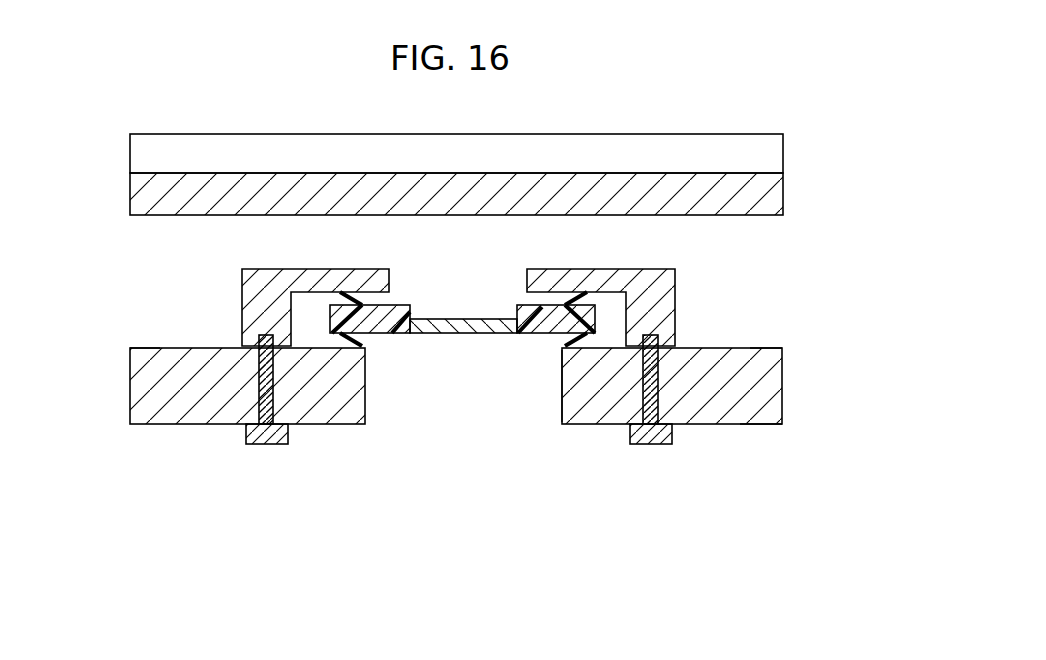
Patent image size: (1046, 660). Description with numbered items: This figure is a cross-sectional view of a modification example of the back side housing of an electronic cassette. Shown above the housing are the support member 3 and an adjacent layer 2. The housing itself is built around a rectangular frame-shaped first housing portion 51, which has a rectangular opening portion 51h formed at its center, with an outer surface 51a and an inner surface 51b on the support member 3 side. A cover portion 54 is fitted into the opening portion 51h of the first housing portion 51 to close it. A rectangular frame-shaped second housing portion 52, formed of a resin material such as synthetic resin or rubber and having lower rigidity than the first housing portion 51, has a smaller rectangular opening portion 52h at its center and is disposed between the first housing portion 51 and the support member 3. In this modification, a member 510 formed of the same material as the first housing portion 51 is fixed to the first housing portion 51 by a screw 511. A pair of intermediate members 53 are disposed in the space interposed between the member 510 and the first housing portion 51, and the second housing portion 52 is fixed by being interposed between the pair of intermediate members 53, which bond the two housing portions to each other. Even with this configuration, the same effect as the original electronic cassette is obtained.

The substrate 2 is at (778, 152).
The support member 3 is at (778, 200).
The first housing portion 51 is at (160, 410).
The member 510 is at (305, 272).
The screw 511 is at (275, 445).
The bottom surface 51a is at (740, 426).
The inner surface 51b is at (135, 346).
The opening portion 51h is at (562, 410).
The second housing portion 52 is at (388, 335).
The opening portion 52h is at (418, 334).
The intermediate member 53 is at (567, 295).
The cover portion 54 is at (457, 334).